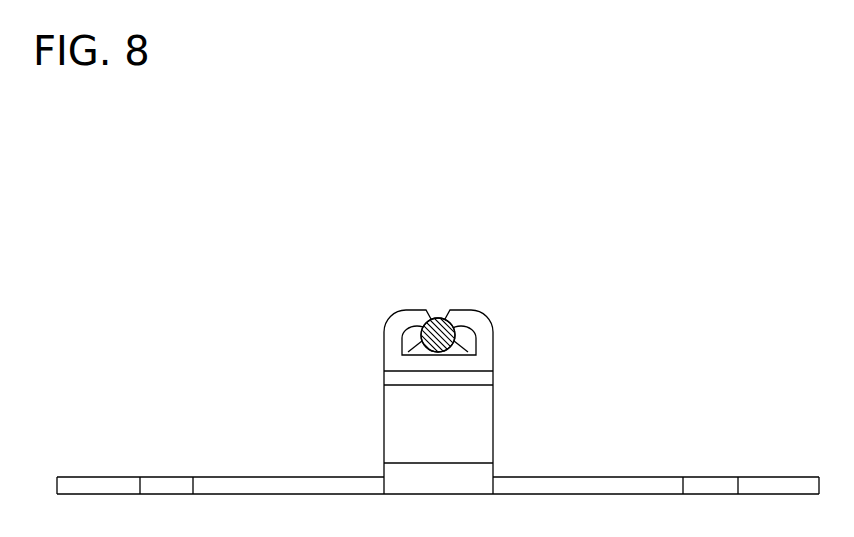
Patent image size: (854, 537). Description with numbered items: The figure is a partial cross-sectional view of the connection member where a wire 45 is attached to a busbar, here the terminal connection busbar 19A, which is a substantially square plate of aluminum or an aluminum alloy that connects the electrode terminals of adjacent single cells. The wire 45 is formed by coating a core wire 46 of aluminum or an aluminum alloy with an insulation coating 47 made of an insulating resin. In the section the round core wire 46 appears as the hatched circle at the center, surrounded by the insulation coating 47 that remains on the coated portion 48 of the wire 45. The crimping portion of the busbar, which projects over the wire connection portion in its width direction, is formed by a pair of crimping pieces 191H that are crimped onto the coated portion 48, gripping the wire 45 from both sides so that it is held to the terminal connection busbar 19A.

The crimping pieces 191H is at (458, 312).
The wire 45 is at (450, 322).
The core wire 46 is at (448, 350).
The insulation coating 47 is at (412, 349).
The coated portion 48 is at (462, 348).
The terminal connection busbar 19A is at (623, 477).